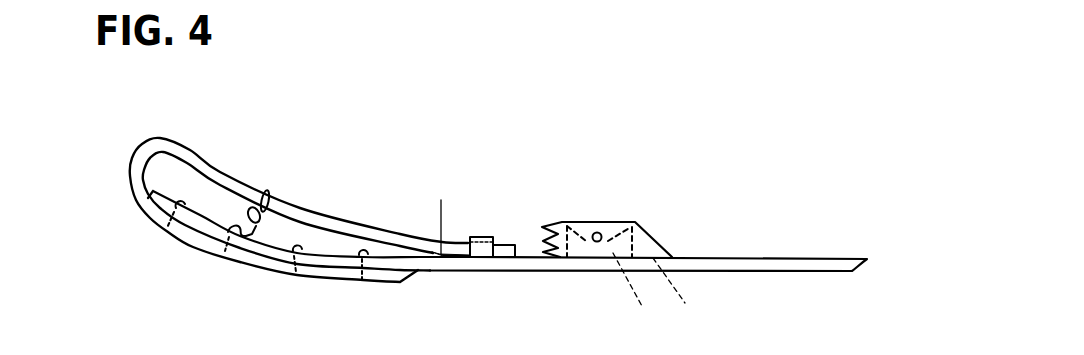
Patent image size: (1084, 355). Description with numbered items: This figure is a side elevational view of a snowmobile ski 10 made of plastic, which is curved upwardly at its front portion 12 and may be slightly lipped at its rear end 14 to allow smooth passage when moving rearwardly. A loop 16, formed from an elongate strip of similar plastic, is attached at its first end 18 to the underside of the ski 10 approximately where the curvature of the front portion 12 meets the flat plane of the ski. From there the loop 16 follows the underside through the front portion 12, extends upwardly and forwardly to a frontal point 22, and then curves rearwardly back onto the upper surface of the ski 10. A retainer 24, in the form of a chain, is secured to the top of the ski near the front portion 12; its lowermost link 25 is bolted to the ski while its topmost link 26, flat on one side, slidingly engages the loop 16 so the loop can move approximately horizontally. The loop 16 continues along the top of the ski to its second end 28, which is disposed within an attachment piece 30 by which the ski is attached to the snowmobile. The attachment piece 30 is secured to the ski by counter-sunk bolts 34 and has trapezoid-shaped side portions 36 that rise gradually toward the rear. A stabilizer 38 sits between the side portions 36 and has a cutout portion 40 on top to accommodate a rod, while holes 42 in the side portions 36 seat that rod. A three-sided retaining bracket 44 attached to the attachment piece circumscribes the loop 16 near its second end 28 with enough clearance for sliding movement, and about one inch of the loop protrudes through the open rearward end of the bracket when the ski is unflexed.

The snowmobile ski 10 is at (747, 143).
The front portion 12 is at (193, 227).
The rear end 14 is at (862, 267).
The loop 16 is at (197, 147).
The first end 18 is at (365, 285).
The frontal point 22 is at (131, 162).
The retainer 24 is at (259, 214).
The lowermost link 25 is at (230, 228).
The topmost link 26 is at (266, 190).
The second end 28 is at (512, 256).
The attachment piece 30 is at (660, 241).
The bolts 34 is at (569, 253).
The side portions 36 is at (641, 223).
The stabilizer 38 is at (636, 293).
The cutout portion 40 is at (580, 240).
The holes 42 is at (600, 232).
The retaining bracket 44 is at (481, 247).